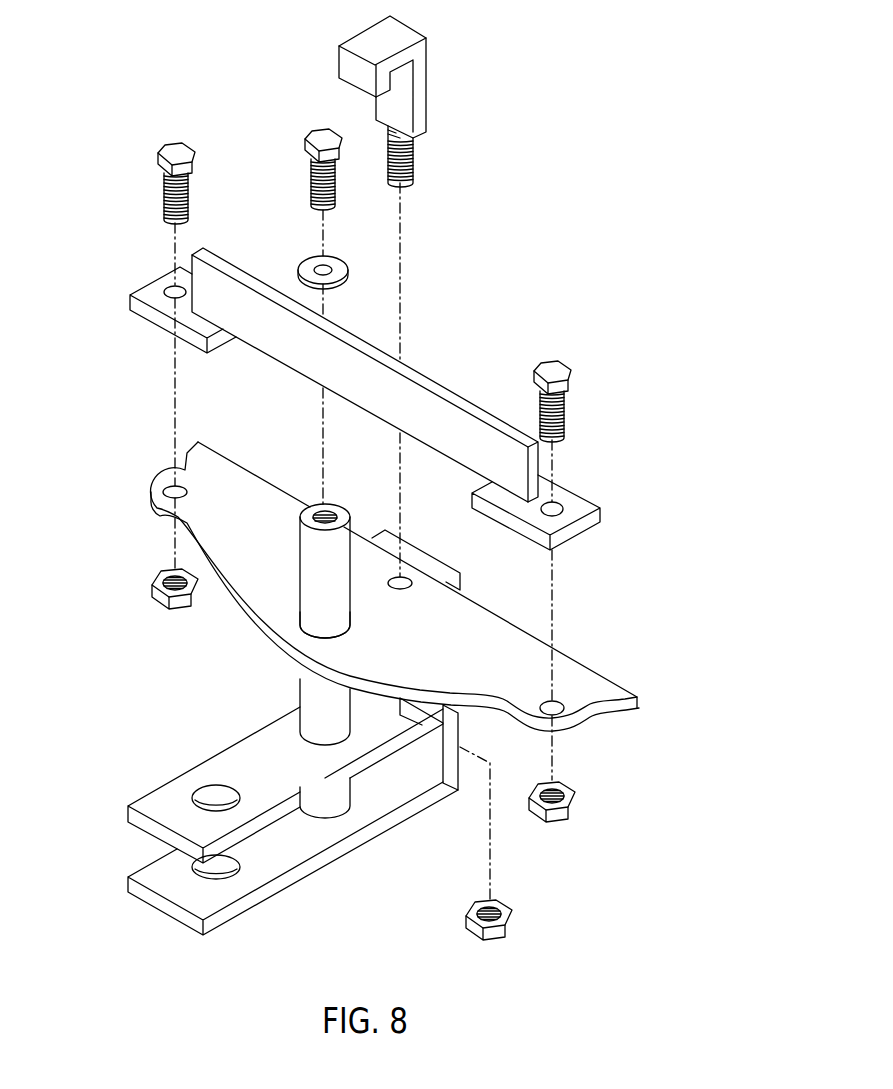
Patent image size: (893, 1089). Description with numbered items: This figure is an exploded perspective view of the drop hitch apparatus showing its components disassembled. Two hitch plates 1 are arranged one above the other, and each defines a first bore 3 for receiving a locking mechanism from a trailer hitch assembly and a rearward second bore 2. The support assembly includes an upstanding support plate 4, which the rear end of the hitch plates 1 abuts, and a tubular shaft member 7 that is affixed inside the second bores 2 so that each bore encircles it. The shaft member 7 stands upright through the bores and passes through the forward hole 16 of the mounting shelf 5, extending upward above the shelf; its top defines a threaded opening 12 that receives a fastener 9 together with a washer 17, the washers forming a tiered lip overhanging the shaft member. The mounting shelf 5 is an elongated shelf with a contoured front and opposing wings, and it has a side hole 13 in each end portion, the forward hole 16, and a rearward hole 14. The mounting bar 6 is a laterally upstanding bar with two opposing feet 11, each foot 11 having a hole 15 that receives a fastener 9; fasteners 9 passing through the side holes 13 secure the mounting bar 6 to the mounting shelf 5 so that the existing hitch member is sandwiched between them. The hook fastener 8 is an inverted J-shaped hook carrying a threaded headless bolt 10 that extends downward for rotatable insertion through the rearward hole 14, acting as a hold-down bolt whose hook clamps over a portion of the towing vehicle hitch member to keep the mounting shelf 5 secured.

The hitch plates 1 is at (293, 846).
The rearward second bore 2 is at (345, 747).
The first bore 3 is at (217, 883).
The upstanding support plate 4 is at (460, 730).
The mounting shelf 5 is at (382, 607).
The mounting bar 6 is at (460, 395).
The tubular shaft member 7 is at (298, 538).
The hook fastener 8 is at (424, 70).
The fastener 9 is at (310, 180).
The threaded headless bolt 10 is at (413, 170).
The foot 11 is at (590, 527).
The threaded opening 12 is at (318, 508).
The side hole 13 is at (162, 484).
The rearward hole 14 is at (405, 580).
The foot hole 15 is at (158, 288).
The forward hole 16 is at (302, 627).
The washer 17 is at (303, 265).